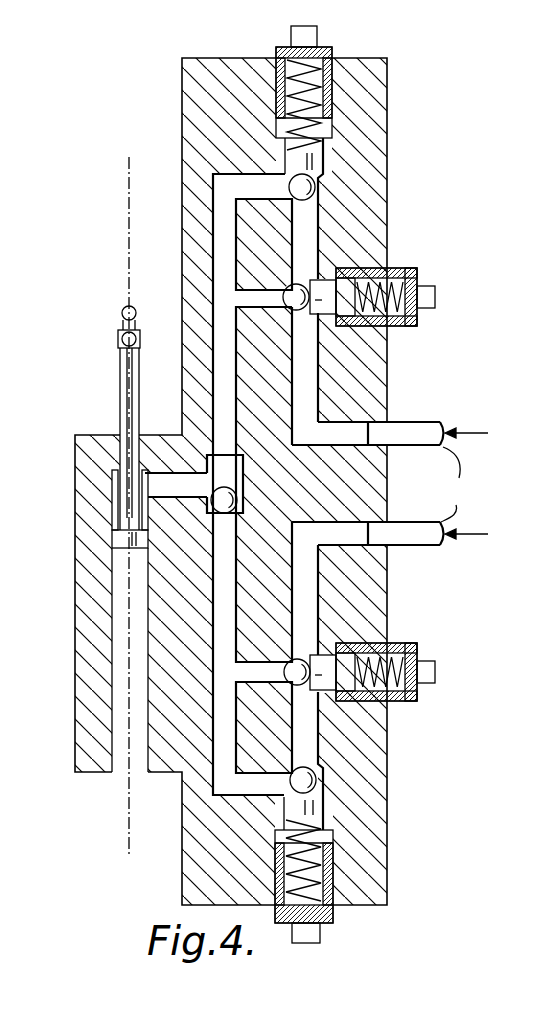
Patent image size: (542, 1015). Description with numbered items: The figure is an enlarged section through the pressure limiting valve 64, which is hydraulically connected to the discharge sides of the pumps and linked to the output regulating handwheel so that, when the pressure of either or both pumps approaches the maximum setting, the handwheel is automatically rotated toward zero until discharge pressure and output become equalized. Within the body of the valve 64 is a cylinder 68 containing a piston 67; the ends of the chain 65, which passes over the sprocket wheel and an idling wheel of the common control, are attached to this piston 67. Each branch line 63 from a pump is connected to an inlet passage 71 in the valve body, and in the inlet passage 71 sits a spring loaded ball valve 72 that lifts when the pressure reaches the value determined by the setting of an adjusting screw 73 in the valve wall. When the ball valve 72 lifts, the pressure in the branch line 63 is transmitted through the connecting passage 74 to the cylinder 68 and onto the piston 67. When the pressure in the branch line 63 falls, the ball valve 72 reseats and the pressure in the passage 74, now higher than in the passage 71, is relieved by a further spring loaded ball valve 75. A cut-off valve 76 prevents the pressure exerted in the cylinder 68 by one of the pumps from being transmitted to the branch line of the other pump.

The branch line 63 is at (464, 483).
The pressure limiting valve 64 is at (222, 87).
The chain 65 is at (127, 183).
The piston 67 is at (122, 384).
The cylinder 68 is at (108, 522).
The inlet passage 71 is at (330, 430).
The spring loaded ball valve 72 is at (342, 89).
The adjusting screw 73 is at (307, 38).
The connecting passage 74 is at (225, 363).
The spring loaded ball valve 75 is at (359, 256).
The cut-off valve 76 is at (232, 496).